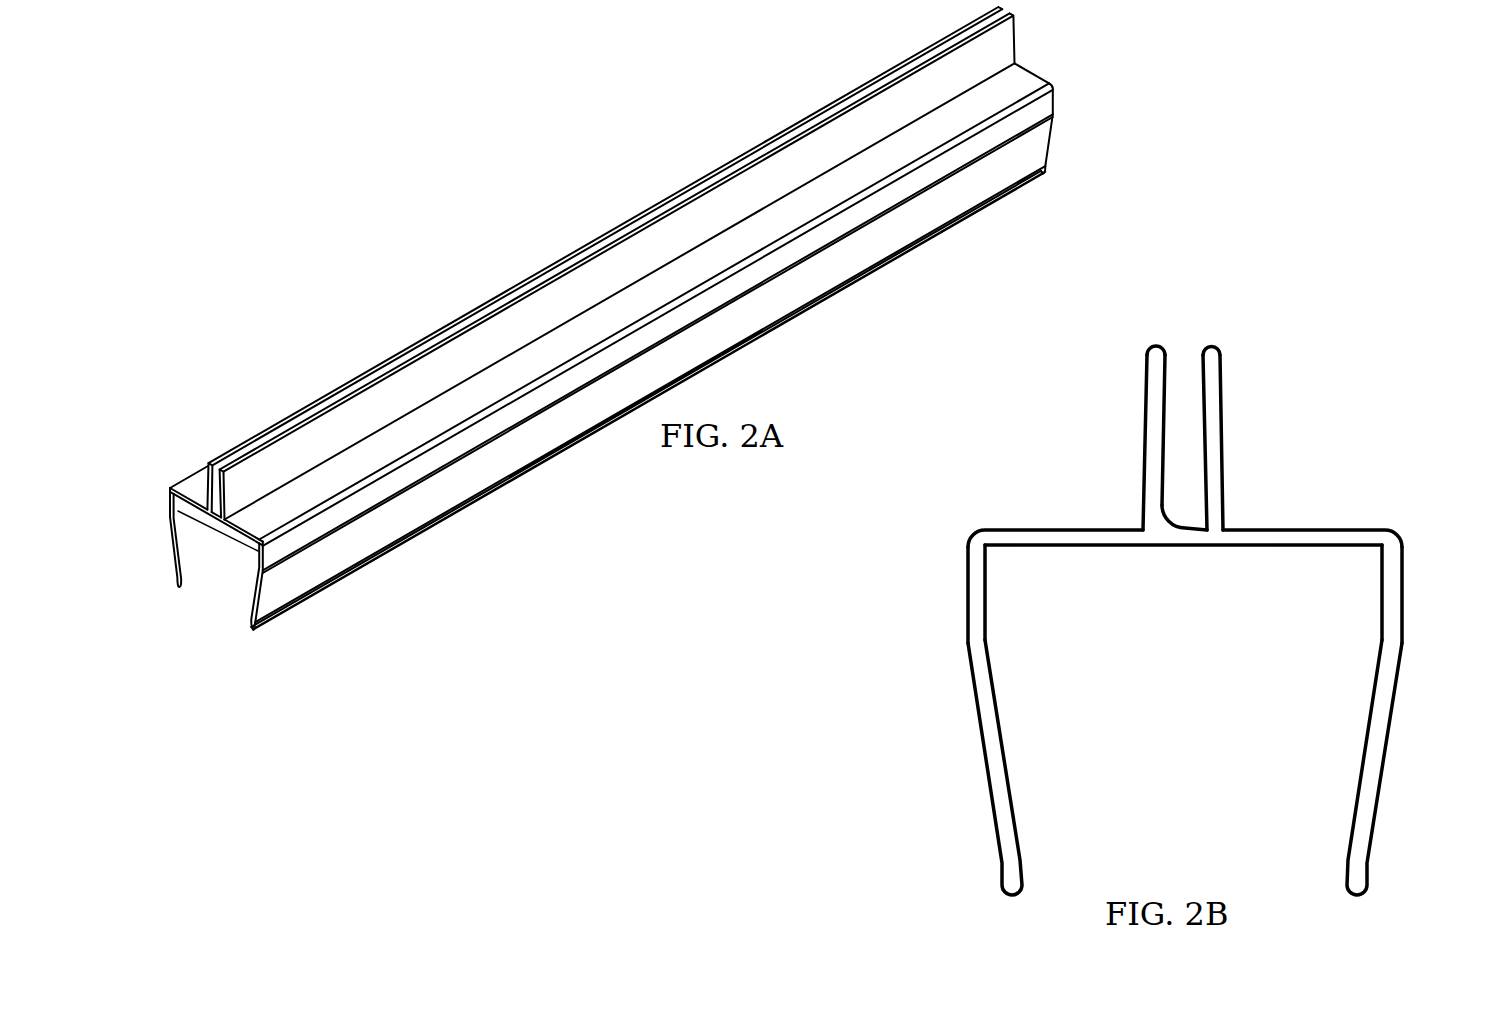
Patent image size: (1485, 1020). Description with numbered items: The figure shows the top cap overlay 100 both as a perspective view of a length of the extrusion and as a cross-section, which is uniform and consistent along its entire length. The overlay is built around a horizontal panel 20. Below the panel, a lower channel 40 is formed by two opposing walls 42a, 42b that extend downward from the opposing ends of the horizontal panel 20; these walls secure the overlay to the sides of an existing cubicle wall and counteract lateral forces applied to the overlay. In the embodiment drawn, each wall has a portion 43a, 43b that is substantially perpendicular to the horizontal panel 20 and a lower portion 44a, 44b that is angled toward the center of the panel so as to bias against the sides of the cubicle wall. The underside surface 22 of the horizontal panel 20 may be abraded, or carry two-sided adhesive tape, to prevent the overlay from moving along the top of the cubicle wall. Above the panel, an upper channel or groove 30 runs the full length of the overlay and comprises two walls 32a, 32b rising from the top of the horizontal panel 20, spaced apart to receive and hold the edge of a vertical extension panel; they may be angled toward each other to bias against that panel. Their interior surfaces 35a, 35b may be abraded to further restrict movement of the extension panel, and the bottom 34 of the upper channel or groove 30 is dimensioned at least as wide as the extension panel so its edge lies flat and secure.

In FIG. 2A, the top cap overlay 100 is at (500, 211).
In FIG. 2B, the top cap overlay 100 is at (1294, 277).
In FIG. 2A, the upper channel or groove 30 is at (667, 204).
In FIG. 2B, the upper channel or groove 30 is at (1191, 254).
In FIG. 2B, the horizontal panel 20 is at (1304, 530).
In FIG. 2B, the underside surface 22 is at (1155, 548).
In FIG. 2A, the wall 32a is at (288, 452).
In FIG. 2B, the wall 32a is at (1224, 440).
In FIG. 2A, the wall 32b is at (202, 482).
In FIG. 2B, the wall 32b is at (1145, 440).
In FIG. 2B, the bottom of the upper channel or groove 34 is at (1160, 497).
In FIG. 2B, the interior surface 35a is at (1195, 357).
In FIG. 2B, the interior surface 35b is at (1170, 357).
In FIG. 2A, the lower channel 40 is at (209, 600).
In FIG. 2B, the lower channel 40 is at (1155, 792).
In FIG. 2A, the opposing wall 42a is at (367, 537).
In FIG. 2B, the opposing wall 42a is at (1400, 680).
In FIG. 2A, the opposing wall 42b is at (183, 548).
In FIG. 2B, the opposing wall 42b is at (966, 680).
In FIG. 2B, the perpendicular portion 43a is at (1380, 595).
In FIG. 2B, the perpendicular portion 43b is at (988, 595).
In FIG. 2B, the angled portion 44a is at (1355, 745).
In FIG. 2B, the angled portion 44b is at (1006, 745).